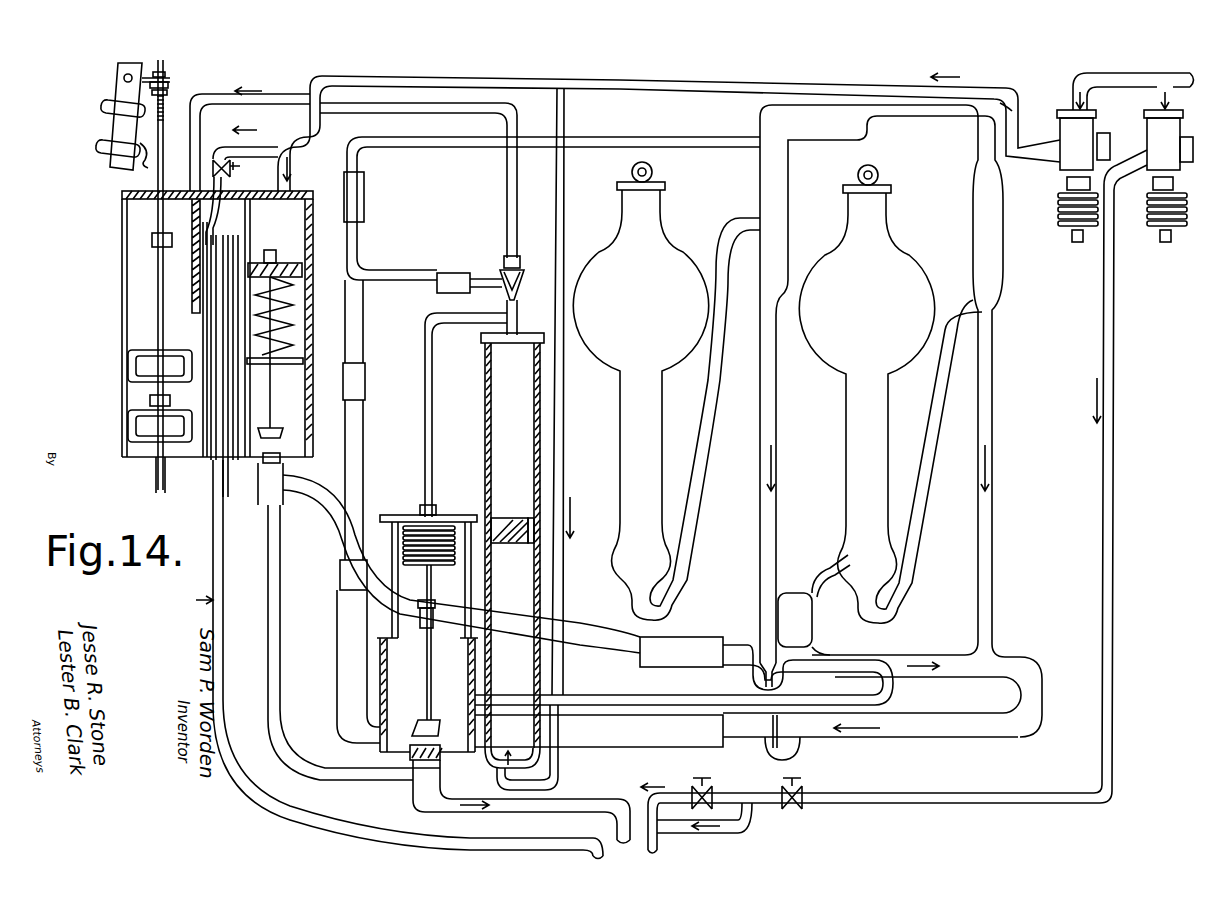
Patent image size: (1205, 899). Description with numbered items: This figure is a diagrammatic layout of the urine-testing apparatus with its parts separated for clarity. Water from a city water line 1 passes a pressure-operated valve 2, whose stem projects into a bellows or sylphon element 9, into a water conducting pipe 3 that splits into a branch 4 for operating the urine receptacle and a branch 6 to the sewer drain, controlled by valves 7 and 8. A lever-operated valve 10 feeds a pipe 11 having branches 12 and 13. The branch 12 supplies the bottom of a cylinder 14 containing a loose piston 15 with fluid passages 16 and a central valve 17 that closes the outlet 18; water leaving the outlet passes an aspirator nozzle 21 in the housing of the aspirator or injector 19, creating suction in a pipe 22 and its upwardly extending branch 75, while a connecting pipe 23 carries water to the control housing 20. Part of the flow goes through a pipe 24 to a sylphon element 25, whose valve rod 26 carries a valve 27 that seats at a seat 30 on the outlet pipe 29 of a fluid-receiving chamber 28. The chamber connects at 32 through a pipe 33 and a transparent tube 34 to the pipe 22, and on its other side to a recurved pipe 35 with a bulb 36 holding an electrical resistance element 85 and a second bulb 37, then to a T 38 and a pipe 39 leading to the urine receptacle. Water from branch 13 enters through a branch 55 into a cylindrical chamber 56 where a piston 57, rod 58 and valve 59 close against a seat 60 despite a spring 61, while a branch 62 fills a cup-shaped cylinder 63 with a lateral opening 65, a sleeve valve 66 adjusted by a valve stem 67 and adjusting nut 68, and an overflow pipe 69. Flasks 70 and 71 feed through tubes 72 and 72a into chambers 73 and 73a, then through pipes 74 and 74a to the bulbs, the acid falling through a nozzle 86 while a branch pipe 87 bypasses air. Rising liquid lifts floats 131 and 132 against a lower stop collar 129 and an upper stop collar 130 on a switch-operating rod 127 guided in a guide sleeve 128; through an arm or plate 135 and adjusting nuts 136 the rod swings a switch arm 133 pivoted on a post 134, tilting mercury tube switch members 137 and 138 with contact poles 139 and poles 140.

The water line 1 is at (1142, 88).
The valve 2 is at (1160, 145).
The water conducting pipe 3 is at (1103, 438).
The branch 4 is at (745, 826).
The branch 6 is at (705, 806).
The valve 7 is at (802, 788).
The valve 8 is at (694, 786).
The bellows or sylphon element 9 is at (1163, 242).
The valve 10 is at (1088, 133).
The pipe 11 is at (1014, 98).
The branch 12 is at (567, 114).
The branch 13 is at (318, 88).
The cylinder 14 is at (545, 590).
The loose piston 15 is at (530, 522).
The fluid passages 16 is at (525, 547).
The valve 17 is at (508, 515).
The outlet 18 is at (515, 342).
The aspirator or injector 19 is at (522, 266).
The control housing 20 is at (122, 312).
The aspirator nozzle 21 is at (521, 285).
The pipe 22 is at (482, 272).
The connecting pipe 23 is at (508, 210).
The pipe 24 is at (433, 392).
The sylphon element 25 is at (440, 518).
The valve rod 26 is at (432, 600).
The valve 27 is at (433, 722).
The fluid-receiving chamber 28 is at (475, 667).
The outlet pipe 29 is at (437, 788).
The seat 30 is at (400, 735).
The lateral opening connection 32 is at (337, 716).
The pipe 33 is at (337, 622).
The transparent tube 34 is at (365, 452).
The pipe 35 is at (570, 748).
The bulb 36 is at (800, 745).
The bulb 37 is at (790, 690).
The T 38 is at (262, 497).
The pipe 39 is at (283, 598).
The branch 55 is at (291, 152).
The cylindrical chamber 56 is at (298, 240).
The piston 57 is at (300, 270).
The rod 58 is at (296, 335).
The valve 59 is at (278, 428).
The seat 60 is at (258, 460).
The spring 61 is at (300, 300).
The branch 62 is at (224, 186).
The cup-shaped cylinder 63 is at (196, 470).
The lateral opening 65 is at (250, 250).
The sleeve valve 66 is at (203, 290).
The valve stem 67 is at (192, 220).
The adjusting nut 68 is at (231, 128).
The overflow pipe 69 is at (230, 162).
The container 70 is at (905, 248).
The container 71 is at (668, 245).
The tube 72 is at (930, 418).
The tube 72a is at (711, 434).
The chamber 73 is at (1000, 252).
The chamber 73a is at (782, 228).
The pipe 74 is at (994, 516).
The pipe 74a is at (778, 515).
The branch 75 is at (366, 178).
The electrical resistance element 85 is at (765, 750).
The nozzle 86 is at (766, 672).
The branch pipe 87 is at (822, 645).
The switch-operating rod 127 is at (166, 110).
The guide sleeve 128 is at (156, 475).
The lower stop collar 129 is at (150, 400).
The upper stop collar 130 is at (152, 240).
The float 131 is at (136, 428).
The float 132 is at (136, 366).
The switch arm 133 is at (120, 88).
The post 134 is at (120, 76).
The arm or plate 135 is at (158, 72).
The adjusting nuts 136 is at (168, 84).
The mercury tube switch member 137 is at (115, 120).
The mercury tube switch member 138 is at (108, 152).
The contact poles 139 is at (100, 106).
The poles of the circuit 140 is at (148, 168).